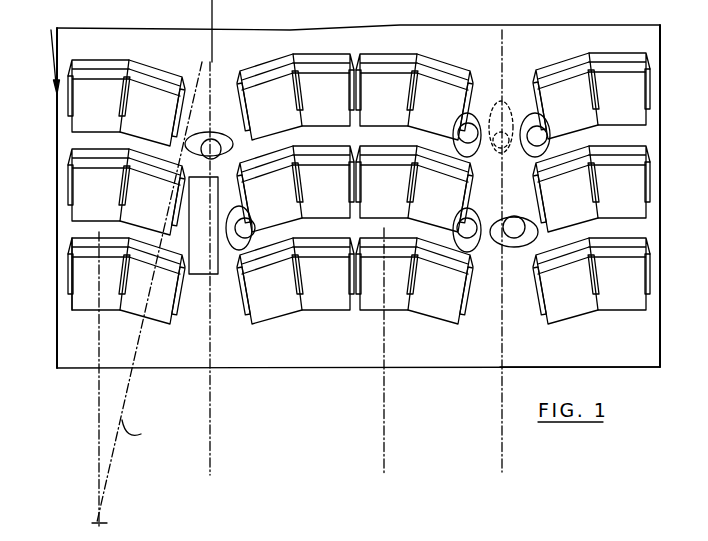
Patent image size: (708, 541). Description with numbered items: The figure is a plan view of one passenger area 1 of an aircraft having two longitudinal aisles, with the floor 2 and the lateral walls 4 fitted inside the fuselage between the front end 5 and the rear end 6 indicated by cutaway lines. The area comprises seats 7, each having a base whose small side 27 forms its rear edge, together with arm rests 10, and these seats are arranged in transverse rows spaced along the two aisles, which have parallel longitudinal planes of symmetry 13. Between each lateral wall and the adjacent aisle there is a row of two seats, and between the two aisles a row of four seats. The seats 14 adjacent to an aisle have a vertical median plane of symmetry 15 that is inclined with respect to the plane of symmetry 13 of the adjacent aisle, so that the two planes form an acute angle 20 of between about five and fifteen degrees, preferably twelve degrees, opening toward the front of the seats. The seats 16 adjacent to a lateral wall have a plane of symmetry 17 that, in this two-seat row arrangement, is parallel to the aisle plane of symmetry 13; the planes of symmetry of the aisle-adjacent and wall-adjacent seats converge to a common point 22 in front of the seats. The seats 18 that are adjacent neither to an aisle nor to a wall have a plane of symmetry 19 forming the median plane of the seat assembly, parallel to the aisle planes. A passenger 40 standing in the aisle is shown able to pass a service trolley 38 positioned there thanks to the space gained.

The seating arrangement 1 is at (50, 59).
The floor 2 is at (545, 347).
The lateral wall 4 is at (62, 39).
The front end 5 is at (362, 368).
The rear end 6 is at (402, 27).
The seat 7 is at (69, 124).
The arm rest 10 is at (67, 292).
The longitudinal plane of symmetry of the aisle 13 is at (214, 15).
The seat adjacent to an aisle 14 is at (174, 312).
The plane of symmetry of aisle-adjacent seat 15 is at (200, 60).
The seat adjacent to a lateral wall 16 is at (90, 295).
The plane of symmetry of wall-adjacent seat 17 is at (95, 400).
The seat not adjacent to an aisle or wall 18 is at (372, 310).
The plane of symmetry of middle seat 19 is at (387, 392).
The acute angle 20 is at (204, 62).
The convergence point 22 is at (103, 521).
The small side of the base 27 is at (82, 238).
The service trolley 38 is at (203, 277).
The passenger 40 is at (218, 135).